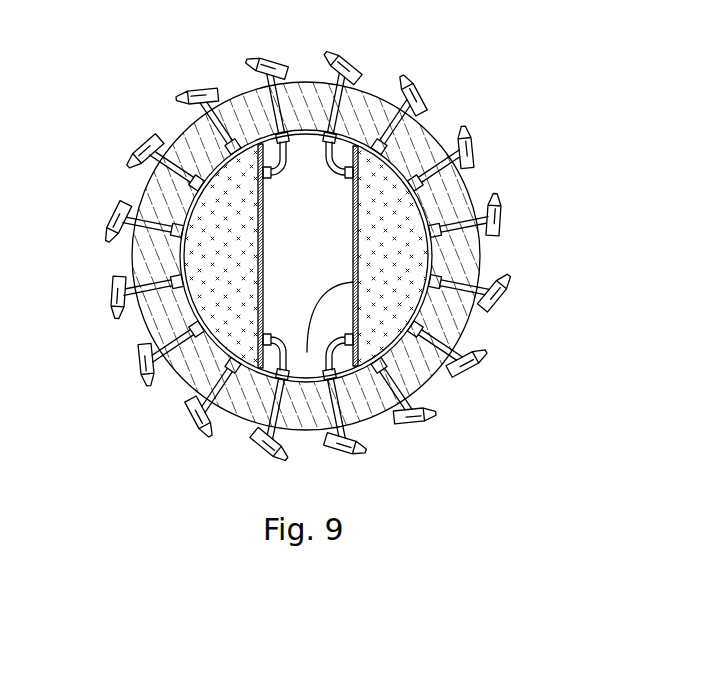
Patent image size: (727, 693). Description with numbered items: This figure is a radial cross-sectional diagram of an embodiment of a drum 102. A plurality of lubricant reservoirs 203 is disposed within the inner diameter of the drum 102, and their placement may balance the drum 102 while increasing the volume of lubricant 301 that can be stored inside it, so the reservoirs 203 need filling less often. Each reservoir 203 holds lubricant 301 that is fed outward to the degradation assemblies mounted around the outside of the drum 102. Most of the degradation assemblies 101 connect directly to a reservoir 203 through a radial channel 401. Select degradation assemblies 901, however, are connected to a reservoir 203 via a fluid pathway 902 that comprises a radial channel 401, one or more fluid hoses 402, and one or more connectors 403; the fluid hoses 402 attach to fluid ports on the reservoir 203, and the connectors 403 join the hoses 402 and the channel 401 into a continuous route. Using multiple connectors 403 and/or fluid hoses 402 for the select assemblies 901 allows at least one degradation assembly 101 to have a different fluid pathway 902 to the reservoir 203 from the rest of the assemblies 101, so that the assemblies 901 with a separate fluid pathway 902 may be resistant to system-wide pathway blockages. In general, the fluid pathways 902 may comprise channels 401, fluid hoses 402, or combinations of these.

The degradation assembly 101 is at (502, 214).
The drum 102 is at (503, 409).
The lubricant reservoir 203 is at (260, 295).
The lubricant 301 is at (221, 268).
The radial channel 401 is at (458, 335).
The fluid hose 402 is at (203, 110).
The connector 403 is at (265, 145).
The select degradation assembly 901 is at (347, 57).
The fluid pathway 902 is at (295, 164).